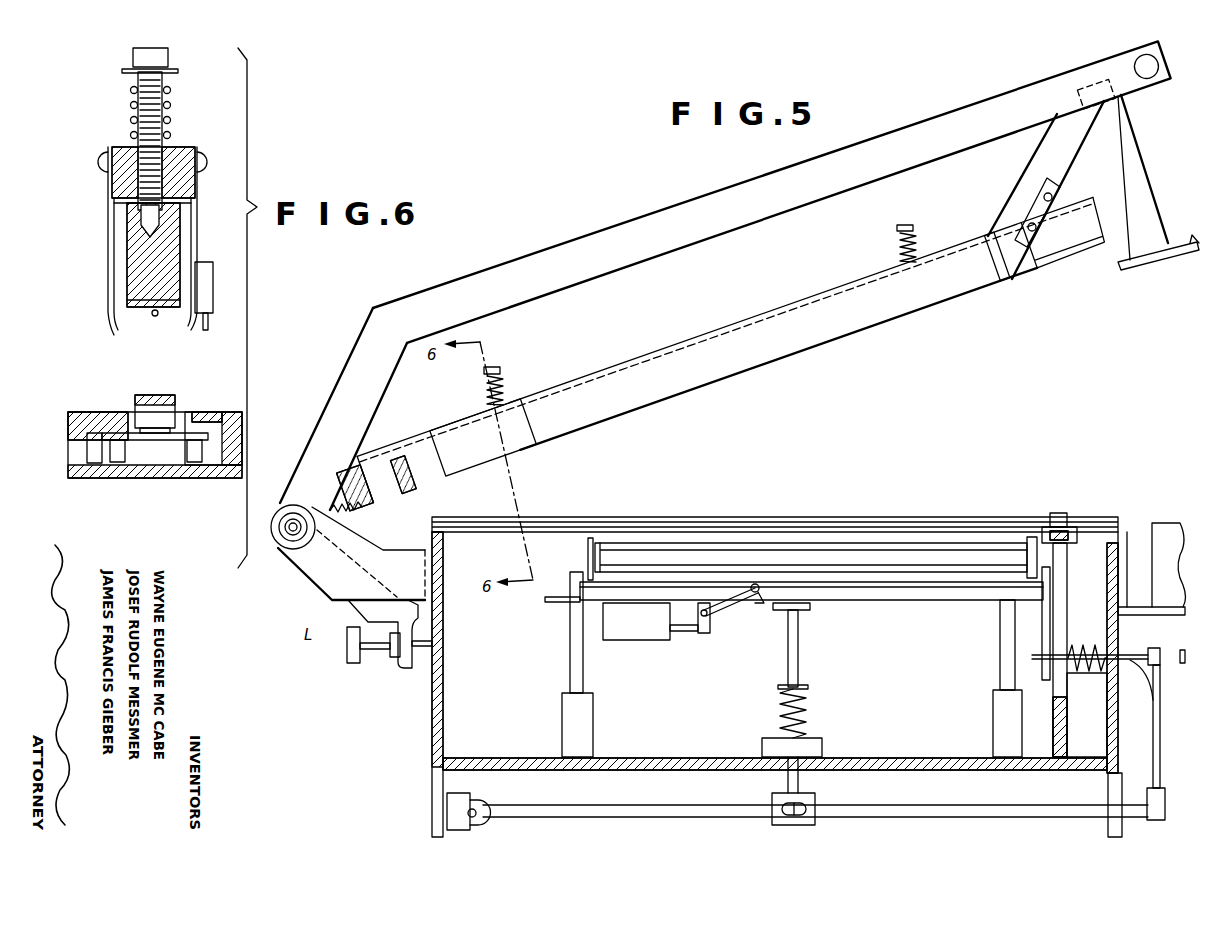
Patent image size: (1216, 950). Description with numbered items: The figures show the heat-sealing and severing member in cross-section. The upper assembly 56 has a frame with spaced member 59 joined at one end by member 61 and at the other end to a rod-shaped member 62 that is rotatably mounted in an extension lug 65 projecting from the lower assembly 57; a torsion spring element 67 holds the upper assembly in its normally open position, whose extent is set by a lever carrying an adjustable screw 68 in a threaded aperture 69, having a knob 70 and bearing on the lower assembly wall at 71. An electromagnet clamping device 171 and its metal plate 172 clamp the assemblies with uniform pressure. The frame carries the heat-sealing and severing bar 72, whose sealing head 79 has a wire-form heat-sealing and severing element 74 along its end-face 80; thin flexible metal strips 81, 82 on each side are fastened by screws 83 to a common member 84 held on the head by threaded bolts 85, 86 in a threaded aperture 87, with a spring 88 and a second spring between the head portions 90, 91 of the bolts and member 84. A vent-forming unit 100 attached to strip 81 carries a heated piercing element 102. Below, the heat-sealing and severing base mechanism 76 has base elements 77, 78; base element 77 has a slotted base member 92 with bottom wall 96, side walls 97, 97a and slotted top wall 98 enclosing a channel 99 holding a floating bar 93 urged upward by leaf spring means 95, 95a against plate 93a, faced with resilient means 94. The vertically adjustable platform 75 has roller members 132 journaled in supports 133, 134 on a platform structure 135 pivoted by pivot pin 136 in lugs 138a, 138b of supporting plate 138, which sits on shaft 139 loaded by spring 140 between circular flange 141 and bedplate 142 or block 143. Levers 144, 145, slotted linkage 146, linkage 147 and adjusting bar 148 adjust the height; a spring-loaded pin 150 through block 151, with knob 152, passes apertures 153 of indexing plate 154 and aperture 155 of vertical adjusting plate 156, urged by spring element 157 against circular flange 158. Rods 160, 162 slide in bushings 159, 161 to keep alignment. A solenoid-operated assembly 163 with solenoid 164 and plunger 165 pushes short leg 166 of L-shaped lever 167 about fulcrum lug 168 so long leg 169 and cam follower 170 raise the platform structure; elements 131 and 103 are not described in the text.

In FIG. 5, the upper assembly 56 is at (727, 369).
In FIG. 5, the lower assembly 57 is at (779, 629).
In FIG. 5, the frame member 59 is at (748, 266).
In FIG. 5, the interconnecting member 61 is at (1173, 58).
In FIG. 5, the rod-shaped member 62 is at (290, 505).
In FIG. 5, the extension lug 65 is at (305, 575).
In FIG. 5, the torsion spring element 67 is at (340, 523).
In FIG. 5, the adjustable screw 68 is at (378, 650).
In FIG. 5, the threaded aperture 69 is at (404, 657).
In FIG. 5, the knob 70 is at (352, 665).
In FIG. 5, the contact point 71 is at (430, 636).
In FIG. 6, the heat-sealing and severing bar 72 is at (197, 138).
In FIG. 5, the heat-sealing and severing bar 72 is at (882, 318).
In FIG. 6, the heat-sealing and severing element 74 is at (158, 315).
In FIG. 5, the heat-sealing and severing element 74 is at (432, 478).
In FIG. 5, the vertically adjustable platform 75 is at (778, 552).
In FIG. 5, the heat-sealing and severing base mechanism 76 is at (995, 520).
In FIG. 6, the base element 77 is at (212, 488).
In FIG. 5, the base element 77 is at (905, 515).
In FIG. 5, the base element 78 is at (1068, 513).
In FIG. 6, the sealing head 79 is at (127, 290).
In FIG. 6, the end-face 80 is at (137, 310).
In FIG. 6, the thin flexible metal strip 81 is at (192, 200).
In FIG. 6, the thin flexible metal strip 82 is at (108, 250).
In FIG. 6, the screws 83 is at (106, 165).
In FIG. 6, the common member 84 is at (172, 147).
In FIG. 6, the threaded bolt 85 is at (160, 72).
In FIG. 5, the threaded bolt 85 is at (505, 365).
In FIG. 5, the threaded bolt 86 is at (910, 224).
In FIG. 6, the threaded aperture 87 is at (140, 207).
In FIG. 6, the spring 88 is at (170, 90).
In FIG. 5, the spring 88 is at (505, 388).
In FIG. 6, the head portion 90 is at (133, 58).
In FIG. 5, the head portion 90 is at (486, 376).
In FIG. 5, the head portion 91 is at (897, 230).
In FIG. 6, the slotted base member 92 is at (232, 478).
In FIG. 6, the floating bar 93 is at (176, 412).
In FIG. 6, the plate 93a is at (150, 440).
In FIG. 6, the resilient means 94 is at (160, 395).
In FIG. 6, the leaf spring means 95 is at (115, 462).
In FIG. 6, the leaf spring means 95a is at (192, 462).
In FIG. 6, the bottom wall 96 is at (165, 478).
In FIG. 6, the side wall 97 is at (68, 460).
In FIG. 6, the side wall 97a is at (238, 412).
In FIG. 6, the slotted top wall 98 is at (100, 412).
In FIG. 6, the channel 99 is at (87, 438).
In FIG. 6, the vent-forming unit 100 is at (213, 282).
In FIG. 6, the piercing element 102 is at (208, 325).
In FIG. 6, the plate 103 is at (212, 405).
In FIG. 5, the tray end bracket 131 is at (585, 575).
In FIG. 5, the roller members 132 is at (810, 545).
In FIG. 5, the support 133 is at (1050, 528).
In FIG. 5, the support 134 is at (600, 540).
In FIG. 5, the platform structure 135 is at (865, 600).
In FIG. 5, the pivot pin 136 is at (1046, 585).
In FIG. 5, the supporting plate 138 is at (930, 600).
In FIG. 5, the lug 138a is at (1050, 595).
In FIG. 5, the lug 138b is at (552, 598).
In FIG. 5, the shaft 139 is at (800, 660).
In FIG. 5, the spring 140 is at (808, 714).
In FIG. 5, the circular flange 141 is at (810, 687).
In FIG. 5, the fixed bedplate 142 is at (880, 760).
In FIG. 5, the block 143 is at (818, 757).
In FIG. 5, the lever 144 is at (712, 815).
In FIG. 5, the lever 145 is at (905, 806).
In FIG. 5, the slotted linkage 146 is at (815, 822).
In FIG. 5, the linkage 147 is at (476, 800).
In FIG. 5, the adjusting bar 148 is at (1160, 738).
In FIG. 5, the spring-loaded pin 150 is at (1165, 695).
In FIG. 5, the block 151 is at (1165, 670).
In FIG. 5, the knob 152 is at (1185, 657).
In FIG. 5, the apertures 153 is at (1062, 640).
In FIG. 5, the indexing plate 154 is at (1067, 738).
In FIG. 5, the aperture 155 is at (1040, 655).
In FIG. 5, the vertical adjusting plate 156 is at (1042, 660).
In FIG. 5, the spring element 157 is at (1082, 675).
In FIG. 5, the circular flange 158 is at (1080, 648).
In FIG. 5, the cylindrical bushing 159 is at (593, 718).
In FIG. 5, the rod 160 is at (570, 652).
In FIG. 5, the cylindrical bushing 161 is at (993, 710).
In FIG. 5, the rod 162 is at (1000, 655).
In FIG. 5, the solenoid-operated assembly 163 is at (695, 645).
In FIG. 5, the solenoid 164 is at (620, 640).
In FIG. 5, the plunger 165 is at (685, 632).
In FIG. 5, the short leg 166 is at (710, 635).
In FIG. 5, the L-shaped lever 167 is at (726, 632).
In FIG. 5, the fulcrum lug 168 is at (688, 598).
In FIG. 5, the long leg 169 is at (752, 596).
In FIG. 5, the cam follower 170 is at (762, 605).
In FIG. 5, the electromagnet clamping device 171 is at (1172, 620).
In FIG. 5, the metal plate 172 is at (1140, 275).